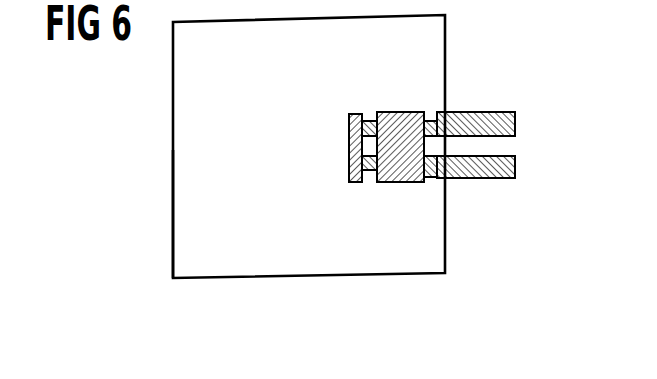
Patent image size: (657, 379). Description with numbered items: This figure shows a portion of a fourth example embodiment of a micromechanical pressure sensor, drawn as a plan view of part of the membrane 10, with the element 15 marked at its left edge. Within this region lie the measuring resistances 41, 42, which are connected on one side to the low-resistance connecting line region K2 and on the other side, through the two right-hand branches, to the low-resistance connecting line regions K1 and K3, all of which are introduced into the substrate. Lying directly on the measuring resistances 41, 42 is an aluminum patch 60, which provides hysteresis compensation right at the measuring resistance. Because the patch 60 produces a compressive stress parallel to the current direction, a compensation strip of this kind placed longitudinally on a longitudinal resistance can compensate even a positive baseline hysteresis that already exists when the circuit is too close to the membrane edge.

The membrane 10 is at (187, 74).
The edge of substrate 15 is at (173, 190).
The low-resistance connecting line region K2 is at (348, 138).
The measuring resistance 41 is at (369, 120).
The measuring resistance 42 is at (372, 183).
The aluminum patch 60 is at (406, 112).
The low-resistance connecting line region K1 is at (516, 118).
The low-resistance connecting line region K3 is at (516, 174).